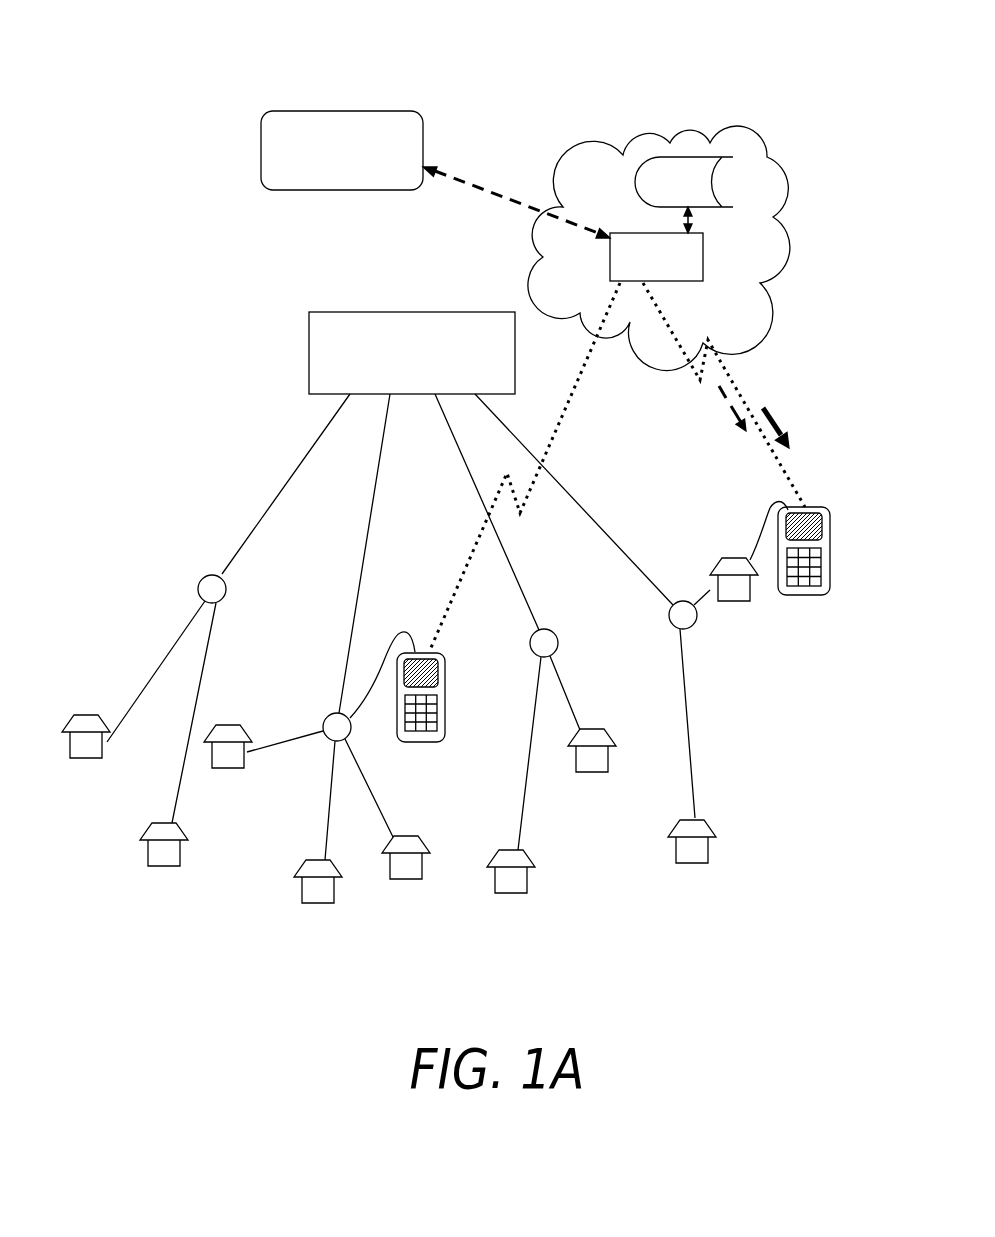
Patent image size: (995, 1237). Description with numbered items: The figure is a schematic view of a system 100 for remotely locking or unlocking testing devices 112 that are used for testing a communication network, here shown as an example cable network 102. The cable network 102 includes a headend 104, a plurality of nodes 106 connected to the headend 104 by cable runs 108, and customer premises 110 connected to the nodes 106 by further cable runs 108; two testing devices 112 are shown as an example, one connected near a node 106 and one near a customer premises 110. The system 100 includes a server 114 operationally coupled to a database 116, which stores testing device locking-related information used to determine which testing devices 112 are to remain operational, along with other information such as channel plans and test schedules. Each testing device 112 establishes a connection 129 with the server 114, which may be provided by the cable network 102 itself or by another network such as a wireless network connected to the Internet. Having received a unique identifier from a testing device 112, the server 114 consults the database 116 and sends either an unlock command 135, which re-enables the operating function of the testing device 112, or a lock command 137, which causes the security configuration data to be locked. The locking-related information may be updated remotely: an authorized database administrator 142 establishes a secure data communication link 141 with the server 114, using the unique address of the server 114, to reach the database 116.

The system 100 is at (500, 48).
The cable network 102 is at (232, 456).
The headend 104 is at (392, 367).
The nodes 106 is at (205, 578).
The cable runs 108 is at (158, 660).
The customer premises 110 is at (90, 758).
The testing device 112 is at (830, 540).
The server 114 is at (637, 271).
The database 116 is at (659, 199).
The connection 129 is at (576, 395).
The unlock command 135 is at (777, 422).
The lock command 137 is at (721, 401).
The secure data communication link 141 is at (482, 186).
The authorized database administrator 142 is at (321, 164).